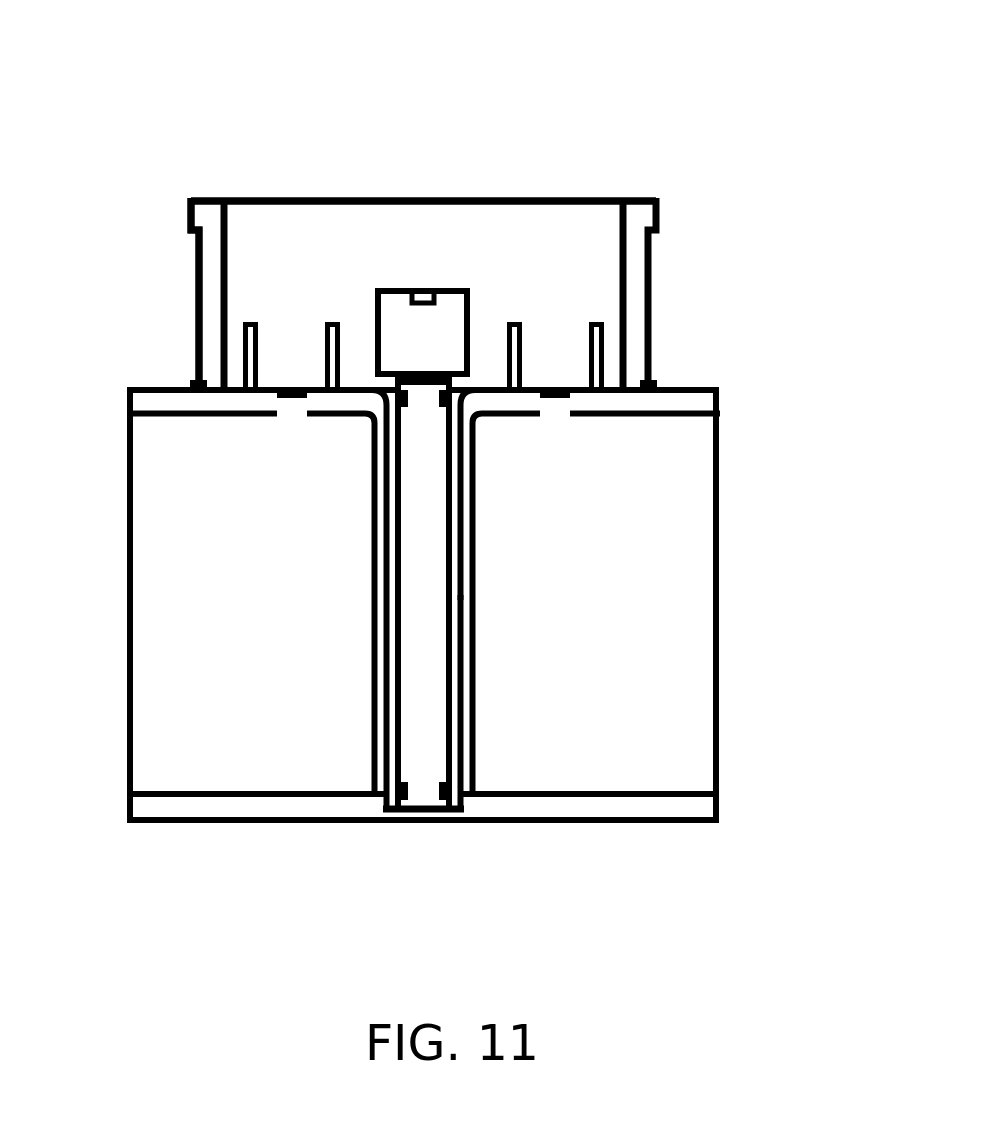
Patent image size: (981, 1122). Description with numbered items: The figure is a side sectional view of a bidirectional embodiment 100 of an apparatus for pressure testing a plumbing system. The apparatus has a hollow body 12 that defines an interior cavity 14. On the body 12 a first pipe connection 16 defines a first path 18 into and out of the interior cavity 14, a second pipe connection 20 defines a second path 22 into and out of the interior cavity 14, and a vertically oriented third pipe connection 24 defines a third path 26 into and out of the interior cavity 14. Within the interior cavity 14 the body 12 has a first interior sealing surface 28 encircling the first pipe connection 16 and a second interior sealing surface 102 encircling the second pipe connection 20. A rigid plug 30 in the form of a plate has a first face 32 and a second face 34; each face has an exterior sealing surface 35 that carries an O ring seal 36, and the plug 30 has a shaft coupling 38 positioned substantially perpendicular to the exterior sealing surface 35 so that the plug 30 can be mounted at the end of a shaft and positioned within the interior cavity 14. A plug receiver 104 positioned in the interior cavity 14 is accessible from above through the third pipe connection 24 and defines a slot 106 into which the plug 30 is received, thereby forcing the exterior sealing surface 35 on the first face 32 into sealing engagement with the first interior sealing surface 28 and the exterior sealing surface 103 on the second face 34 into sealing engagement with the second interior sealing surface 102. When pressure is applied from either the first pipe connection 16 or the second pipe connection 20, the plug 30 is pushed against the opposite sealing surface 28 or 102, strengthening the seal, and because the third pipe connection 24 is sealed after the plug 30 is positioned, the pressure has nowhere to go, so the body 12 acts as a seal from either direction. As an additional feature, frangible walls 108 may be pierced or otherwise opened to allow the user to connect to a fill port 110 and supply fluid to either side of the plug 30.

The bidirectional embodiment 100 is at (158, 97).
The hollow body 12 is at (652, 256).
The interior cavity 14 is at (592, 217).
The first pipe connection 16 is at (148, 386).
The first path 18 is at (160, 455).
The second pipe connection 20 is at (720, 387).
The second path 22 is at (706, 470).
The third pipe connection 24 is at (201, 196).
The third path 26 is at (288, 216).
The first interior sealing surface 28 is at (400, 500).
The rigid plug 30 is at (411, 575).
The first face 32 is at (393, 613).
The second face 34 is at (455, 525).
The exterior sealing surface 35 is at (400, 692).
The O ring seal 36 is at (413, 798).
The shaft coupling 38 is at (473, 313).
The second interior sealing surface 102 is at (455, 469).
The exterior sealing surface 103 is at (458, 682).
The plug receiver 104 is at (385, 388).
The slot 106 is at (392, 815).
The frangible walls 108 is at (293, 412).
The fill port 110 is at (251, 322).